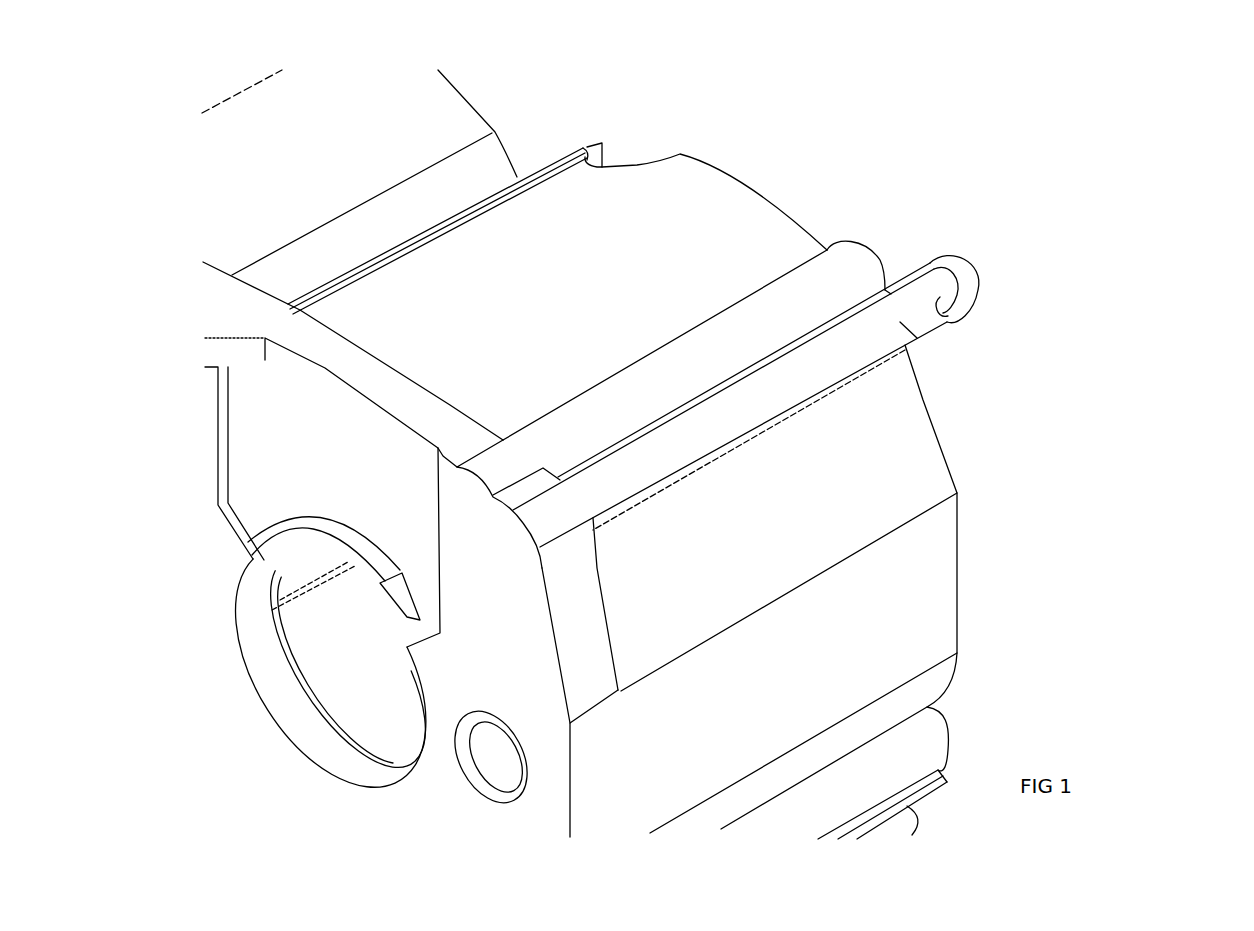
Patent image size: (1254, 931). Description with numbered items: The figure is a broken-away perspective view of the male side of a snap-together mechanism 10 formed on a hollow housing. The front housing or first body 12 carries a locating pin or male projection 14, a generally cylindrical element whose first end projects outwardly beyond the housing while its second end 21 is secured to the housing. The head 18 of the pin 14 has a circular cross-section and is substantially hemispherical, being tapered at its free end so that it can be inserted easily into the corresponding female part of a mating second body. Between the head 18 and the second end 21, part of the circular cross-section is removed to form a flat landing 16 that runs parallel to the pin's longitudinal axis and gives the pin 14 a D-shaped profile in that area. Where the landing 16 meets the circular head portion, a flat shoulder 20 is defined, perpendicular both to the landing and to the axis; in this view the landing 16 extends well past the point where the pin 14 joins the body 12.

The snap-together mechanism 10 is at (1135, 177).
The first body 12 is at (960, 548).
The locating pin 14 is at (919, 245).
The landing 16 is at (920, 336).
The head 18 is at (965, 263).
The shoulder 20 is at (960, 323).
The second end 21 is at (903, 357).